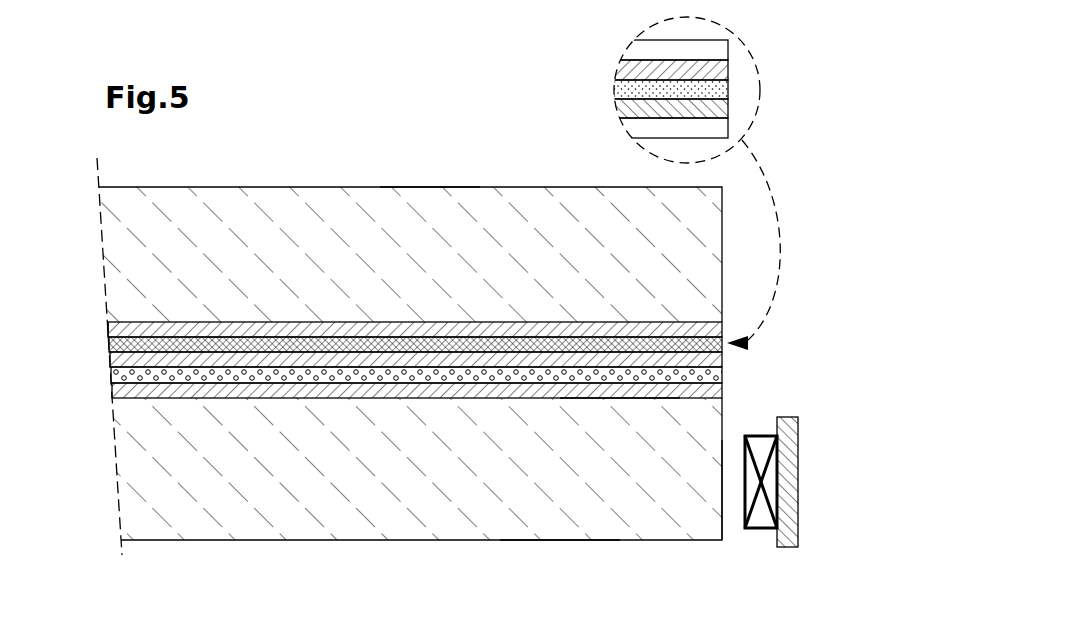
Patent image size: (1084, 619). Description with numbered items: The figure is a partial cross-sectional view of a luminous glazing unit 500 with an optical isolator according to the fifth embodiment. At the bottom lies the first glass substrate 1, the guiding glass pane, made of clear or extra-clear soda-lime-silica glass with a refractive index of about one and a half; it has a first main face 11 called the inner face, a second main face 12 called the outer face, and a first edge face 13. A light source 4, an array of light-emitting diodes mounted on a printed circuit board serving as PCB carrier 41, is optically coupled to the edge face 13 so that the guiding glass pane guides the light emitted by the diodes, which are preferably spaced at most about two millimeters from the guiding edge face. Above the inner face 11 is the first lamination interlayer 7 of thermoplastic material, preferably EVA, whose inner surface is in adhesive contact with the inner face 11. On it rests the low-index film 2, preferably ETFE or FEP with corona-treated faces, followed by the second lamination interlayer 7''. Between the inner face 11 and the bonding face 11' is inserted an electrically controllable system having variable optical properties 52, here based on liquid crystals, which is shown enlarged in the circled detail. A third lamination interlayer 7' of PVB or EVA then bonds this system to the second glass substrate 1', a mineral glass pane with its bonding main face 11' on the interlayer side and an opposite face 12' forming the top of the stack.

The luminous glazing unit 500 is at (357, 136).
The second glass substrate 1' is at (410, 254).
The first glass substrate 1 is at (417, 469).
The opposite face 12' is at (433, 151).
The second main face 12 is at (560, 568).
The bonding main face 11' is at (415, 298).
The first main face 11 is at (620, 430).
The third lamination interlayer 7' is at (90, 304).
The electrically controllable system having variable optical properties 52 is at (112, 347).
The second lamination interlayer 7'' is at (378, 372).
The low-index film 2 is at (112, 377).
The first lamination interlayer 7 is at (405, 433).
The first edge face 13 is at (723, 541).
The light source 4 is at (758, 529).
The PCB carrier 41 is at (785, 417).